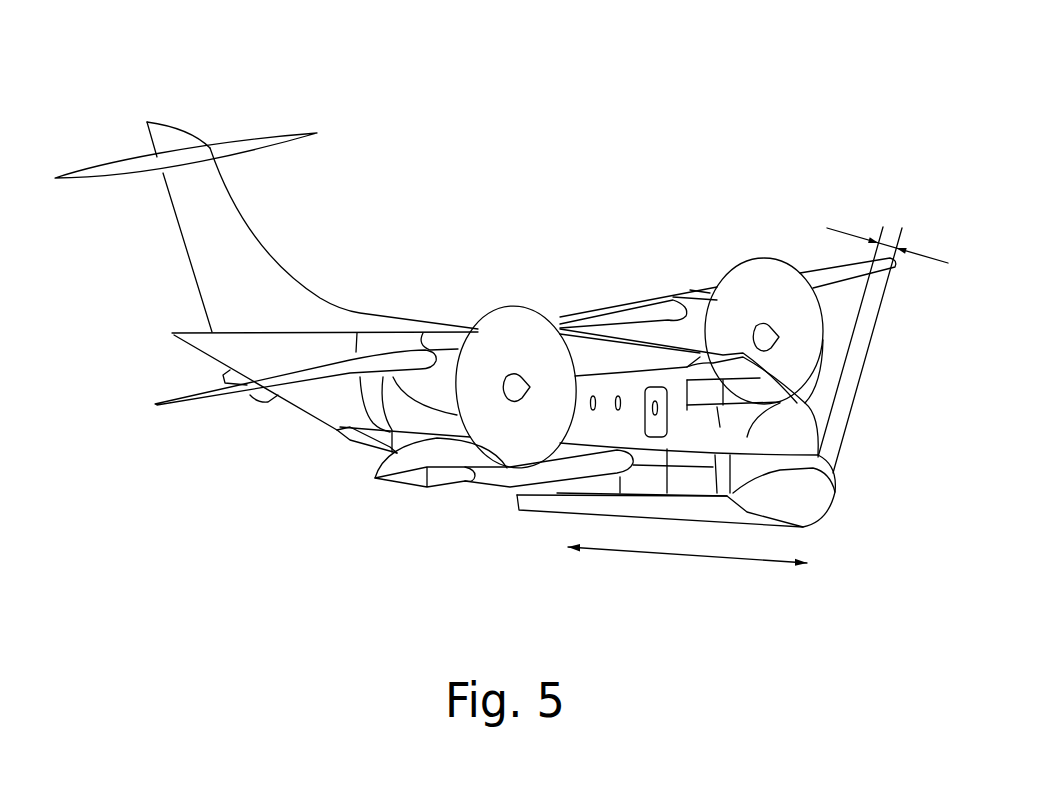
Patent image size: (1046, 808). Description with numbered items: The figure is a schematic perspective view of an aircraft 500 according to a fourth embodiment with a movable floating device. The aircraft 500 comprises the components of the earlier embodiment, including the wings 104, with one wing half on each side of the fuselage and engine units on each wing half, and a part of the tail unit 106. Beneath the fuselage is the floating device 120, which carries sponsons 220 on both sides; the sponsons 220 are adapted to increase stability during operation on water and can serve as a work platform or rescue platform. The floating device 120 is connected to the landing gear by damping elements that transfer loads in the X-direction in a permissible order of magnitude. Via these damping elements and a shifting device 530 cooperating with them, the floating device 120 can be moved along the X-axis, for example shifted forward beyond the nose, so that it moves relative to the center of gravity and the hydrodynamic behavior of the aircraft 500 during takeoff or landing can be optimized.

The aircraft 500 is at (510, 230).
The tail unit 106 is at (137, 158).
The wings 104 is at (356, 352).
The sponsons 220 is at (375, 468).
The floating device 120 is at (450, 540).
The shifting device 530 is at (678, 553).